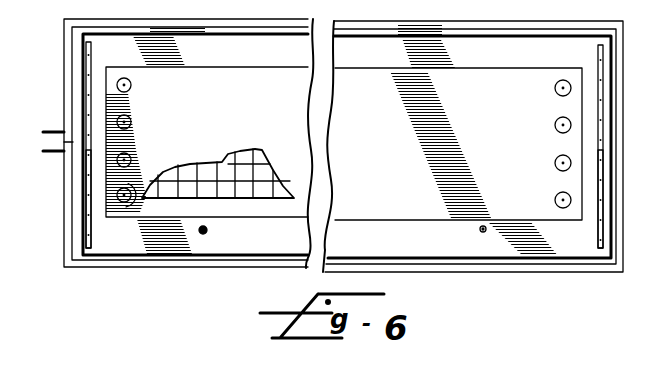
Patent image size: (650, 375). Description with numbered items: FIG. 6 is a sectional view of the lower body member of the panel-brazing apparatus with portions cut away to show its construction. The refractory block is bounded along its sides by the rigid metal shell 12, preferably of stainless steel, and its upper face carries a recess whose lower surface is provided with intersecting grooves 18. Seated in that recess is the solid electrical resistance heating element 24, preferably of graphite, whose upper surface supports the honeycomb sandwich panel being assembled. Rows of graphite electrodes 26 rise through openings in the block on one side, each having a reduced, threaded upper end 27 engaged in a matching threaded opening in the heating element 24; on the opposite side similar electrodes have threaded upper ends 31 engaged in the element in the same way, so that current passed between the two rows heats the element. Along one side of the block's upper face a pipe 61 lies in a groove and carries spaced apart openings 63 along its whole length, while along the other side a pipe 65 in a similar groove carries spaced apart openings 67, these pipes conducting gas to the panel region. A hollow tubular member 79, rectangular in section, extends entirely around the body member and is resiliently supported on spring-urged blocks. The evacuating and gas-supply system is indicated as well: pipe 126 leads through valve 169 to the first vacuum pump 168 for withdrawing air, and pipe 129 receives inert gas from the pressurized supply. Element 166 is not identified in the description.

The metal shell 12 is at (614, 168).
The intersecting grooves 18 is at (246, 198).
The electrical resistance heating element 24 is at (223, 70).
The electrode 26 is at (136, 203).
The upper end of electrode 27 is at (128, 117).
The upper end of electrode 31 is at (560, 93).
The pipe 61 is at (92, 56).
The spaced apart openings 63 is at (92, 233).
The pipe 65 is at (598, 55).
The spaced apart openings 67 is at (598, 228).
The hollow tubular member 79 is at (496, 26).
The pipe 126 is at (479, 230).
The pipe 129 is at (207, 232).
The connector 166 is at (0, 143).
The first vacuum pump 168 is at (52, 130).
The valve 169 is at (49, 156).